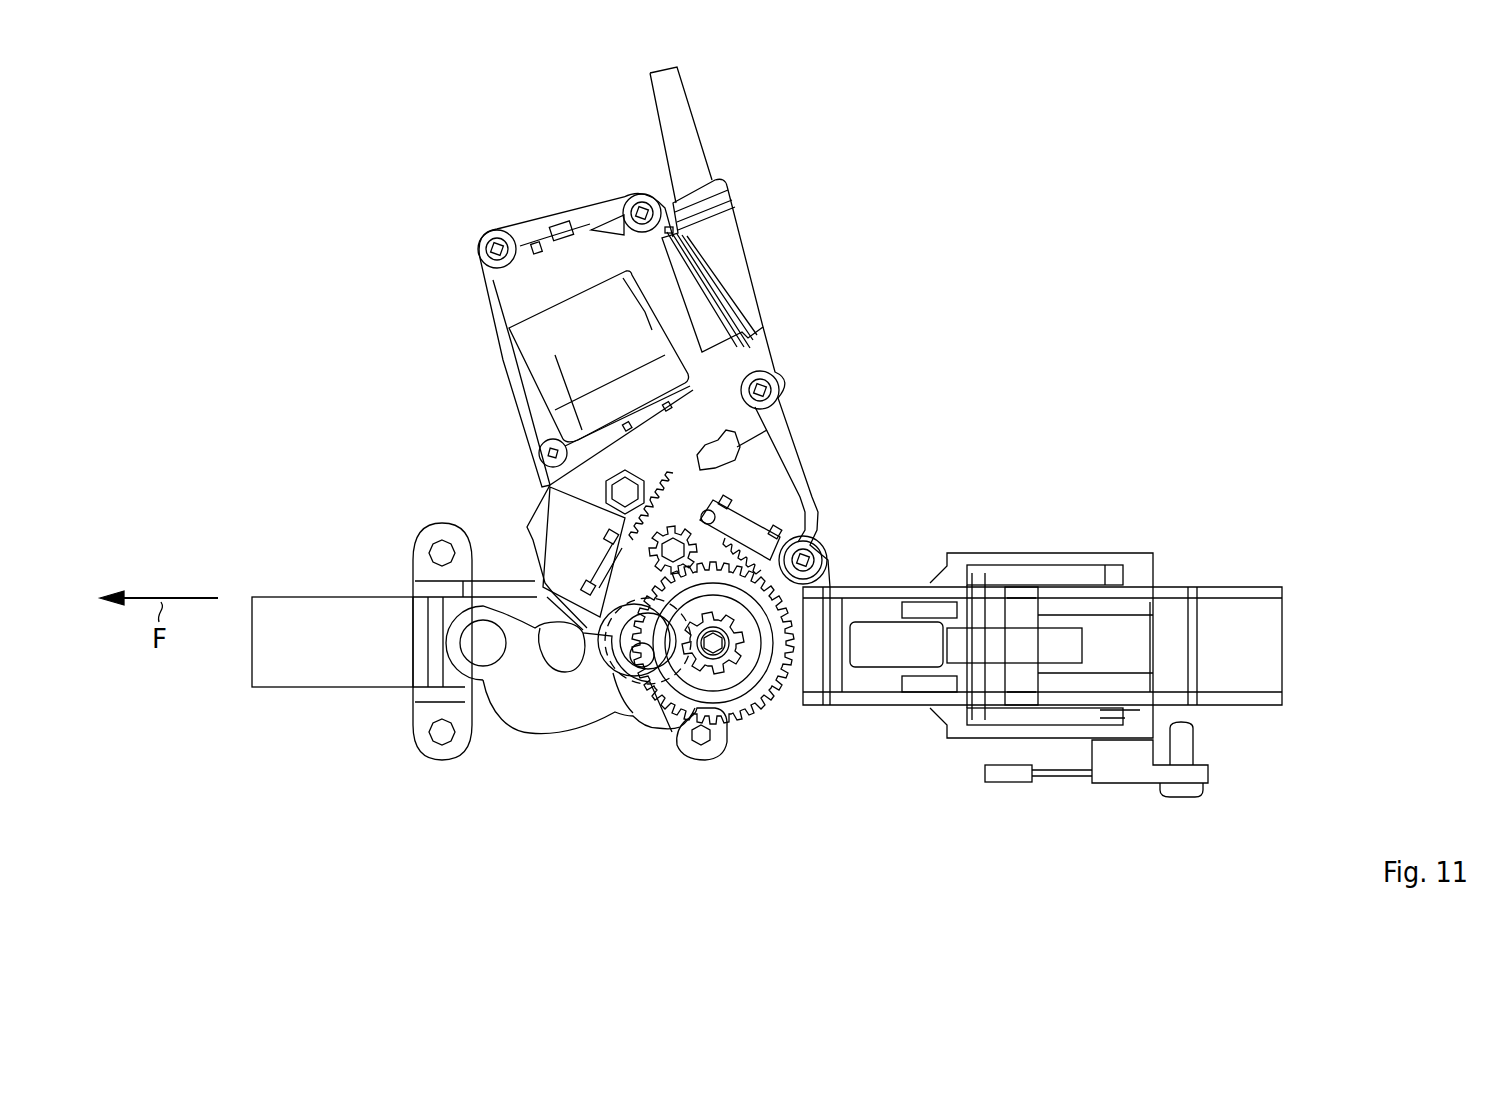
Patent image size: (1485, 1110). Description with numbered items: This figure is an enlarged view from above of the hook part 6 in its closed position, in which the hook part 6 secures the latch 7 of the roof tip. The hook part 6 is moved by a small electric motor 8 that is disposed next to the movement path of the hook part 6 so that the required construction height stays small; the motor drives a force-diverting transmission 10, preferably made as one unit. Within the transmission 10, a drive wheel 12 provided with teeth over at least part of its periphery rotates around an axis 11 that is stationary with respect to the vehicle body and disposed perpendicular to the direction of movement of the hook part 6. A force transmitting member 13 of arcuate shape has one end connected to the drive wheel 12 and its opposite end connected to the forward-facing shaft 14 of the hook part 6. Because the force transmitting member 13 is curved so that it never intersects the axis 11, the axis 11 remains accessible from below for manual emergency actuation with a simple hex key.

The hook part 6 is at (975, 647).
The latch 7 is at (1025, 612).
The electric motor 8 is at (603, 340).
The force-diverting transmission 10 is at (846, 462).
The axis 11 is at (710, 645).
The drive wheel 12 is at (747, 700).
The force transmitting member 13 is at (568, 697).
The forward-facing shaft 14 is at (453, 607).